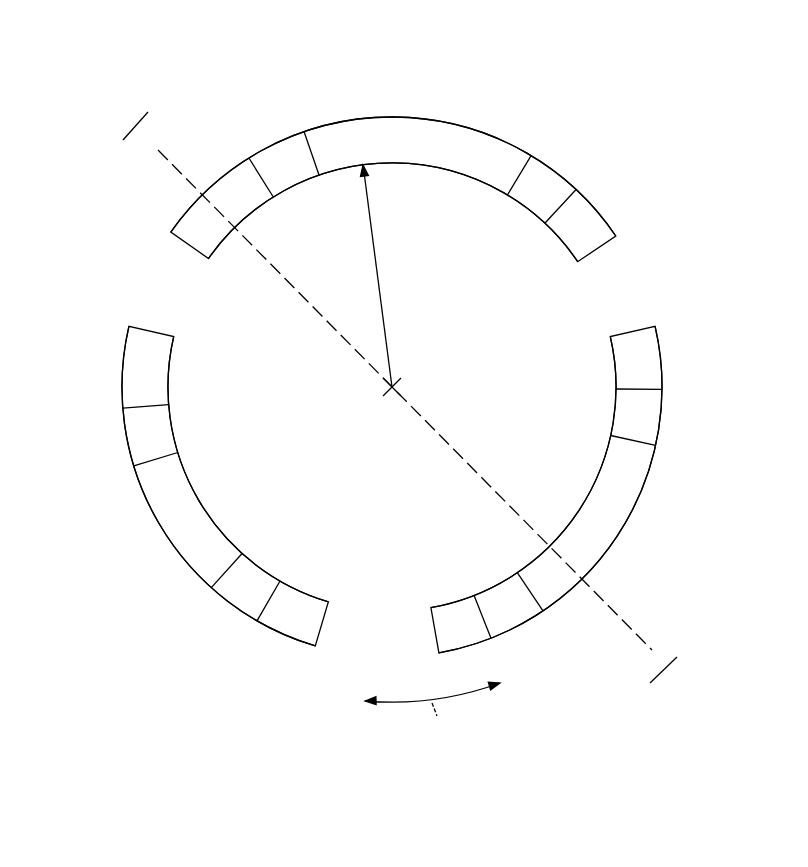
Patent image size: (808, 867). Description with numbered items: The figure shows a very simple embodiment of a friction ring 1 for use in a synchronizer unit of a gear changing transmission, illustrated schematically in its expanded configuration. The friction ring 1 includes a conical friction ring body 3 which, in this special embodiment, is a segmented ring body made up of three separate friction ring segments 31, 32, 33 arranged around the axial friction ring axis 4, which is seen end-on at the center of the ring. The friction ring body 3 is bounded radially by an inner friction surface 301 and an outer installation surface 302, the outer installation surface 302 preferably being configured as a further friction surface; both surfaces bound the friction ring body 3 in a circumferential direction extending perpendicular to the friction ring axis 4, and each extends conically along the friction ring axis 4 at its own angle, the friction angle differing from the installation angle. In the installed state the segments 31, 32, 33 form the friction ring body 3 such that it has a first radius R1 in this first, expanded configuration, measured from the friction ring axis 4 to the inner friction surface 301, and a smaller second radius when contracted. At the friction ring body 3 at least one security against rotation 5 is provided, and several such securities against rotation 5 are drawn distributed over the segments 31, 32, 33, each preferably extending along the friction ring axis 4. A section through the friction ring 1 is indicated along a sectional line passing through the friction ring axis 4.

The friction ring 1 is at (566, 129).
The friction ring body 3 is at (688, 572).
The friction ring segment 31 is at (421, 133).
The friction ring segment 32 is at (554, 578).
The friction ring segment 33 is at (156, 473).
The inner friction surface 301 is at (449, 172).
The outer installation surface 302 is at (353, 110).
The security against rotation 5 is at (283, 160).
The friction ring axis 4 is at (386, 388).
The first radius R1 is at (390, 276).